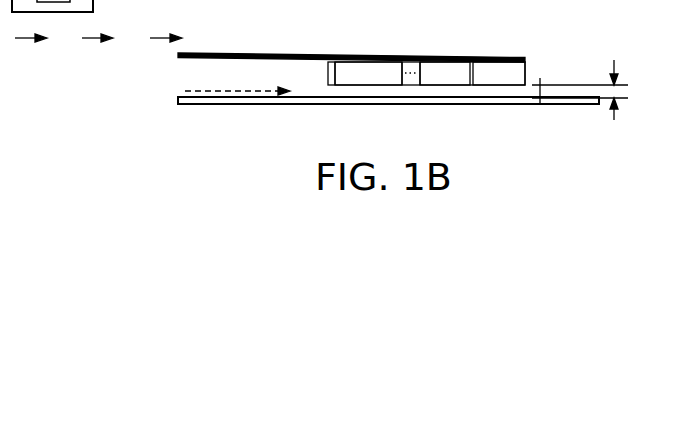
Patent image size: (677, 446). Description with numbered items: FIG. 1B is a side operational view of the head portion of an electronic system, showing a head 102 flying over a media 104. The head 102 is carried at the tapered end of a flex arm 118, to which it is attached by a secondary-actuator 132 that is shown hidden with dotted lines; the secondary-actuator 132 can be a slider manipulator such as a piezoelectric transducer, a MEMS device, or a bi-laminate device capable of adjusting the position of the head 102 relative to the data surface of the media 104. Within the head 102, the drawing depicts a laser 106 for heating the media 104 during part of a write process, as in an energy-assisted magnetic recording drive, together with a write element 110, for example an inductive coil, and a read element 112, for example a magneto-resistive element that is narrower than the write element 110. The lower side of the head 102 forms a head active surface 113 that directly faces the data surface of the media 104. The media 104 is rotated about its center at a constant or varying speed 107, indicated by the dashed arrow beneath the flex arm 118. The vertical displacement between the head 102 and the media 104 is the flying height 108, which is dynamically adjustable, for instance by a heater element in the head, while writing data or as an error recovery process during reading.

The head 102 is at (541, 70).
The media 104 is at (262, 104).
The laser 106 is at (342, 85).
The speed 107 is at (221, 86).
The flying height 108 is at (615, 60).
The write element 110 is at (427, 85).
The read element 112 is at (484, 85).
The head active surface 113 is at (497, 85).
The flex arm 118 is at (270, 55).
The secondary-actuator 132 is at (410, 57).